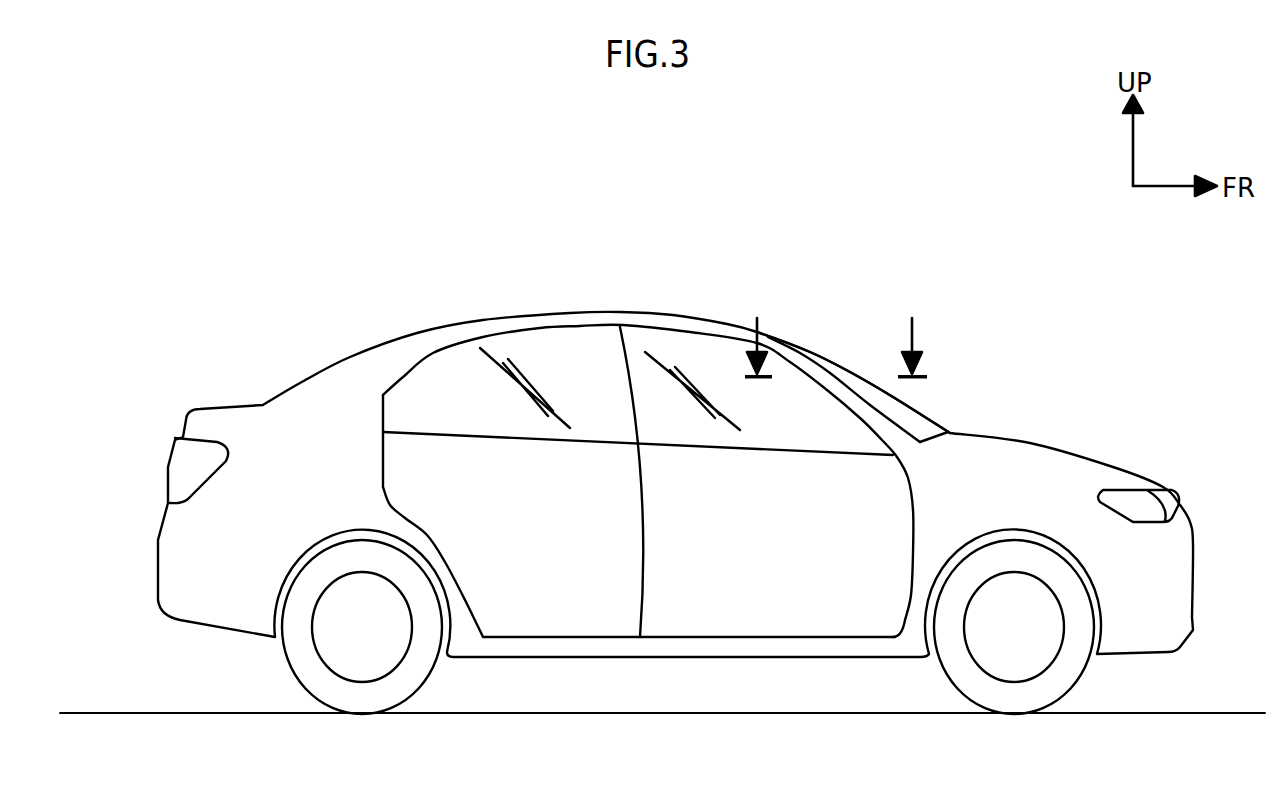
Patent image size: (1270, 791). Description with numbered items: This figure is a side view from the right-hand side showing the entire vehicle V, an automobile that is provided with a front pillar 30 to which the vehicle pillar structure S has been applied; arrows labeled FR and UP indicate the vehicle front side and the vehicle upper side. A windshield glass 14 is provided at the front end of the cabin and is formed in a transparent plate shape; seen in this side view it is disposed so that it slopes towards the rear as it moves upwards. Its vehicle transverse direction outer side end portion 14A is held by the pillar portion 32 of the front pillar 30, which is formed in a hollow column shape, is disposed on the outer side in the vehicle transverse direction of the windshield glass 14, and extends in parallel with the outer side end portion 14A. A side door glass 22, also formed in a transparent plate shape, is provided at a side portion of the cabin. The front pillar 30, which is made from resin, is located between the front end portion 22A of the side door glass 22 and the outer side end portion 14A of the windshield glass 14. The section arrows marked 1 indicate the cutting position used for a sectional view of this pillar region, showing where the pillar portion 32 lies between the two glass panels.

The vehicle sensor (camera) / mounting position arrows 1 is at (836, 333).
The windshield glass 14 is at (810, 345).
The vehicle transverse direction outer side end portion 14A is at (820, 362).
The side door glass 22 is at (682, 350).
The front end portion 22A is at (837, 400).
The front pillar 30 is at (905, 340).
The pillar portion 32 is at (878, 419).
The vehicle V is at (508, 240).
The space / region at the front pillar S is at (872, 332).